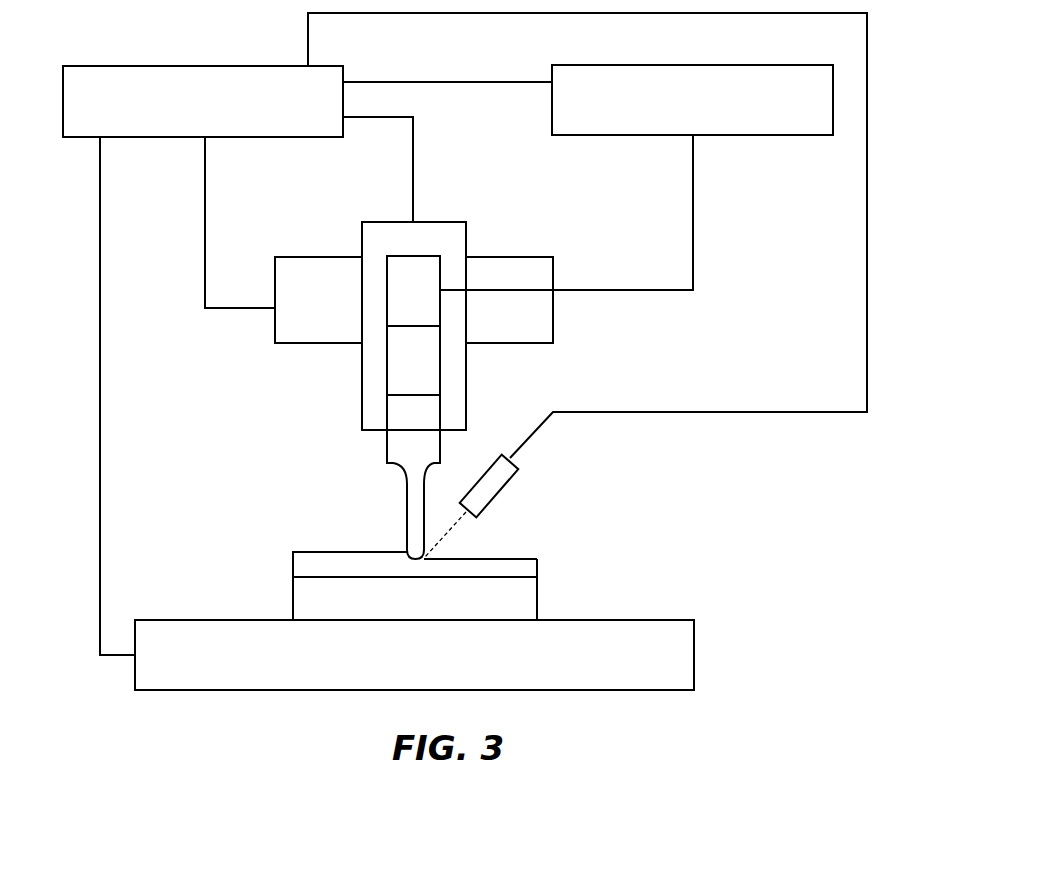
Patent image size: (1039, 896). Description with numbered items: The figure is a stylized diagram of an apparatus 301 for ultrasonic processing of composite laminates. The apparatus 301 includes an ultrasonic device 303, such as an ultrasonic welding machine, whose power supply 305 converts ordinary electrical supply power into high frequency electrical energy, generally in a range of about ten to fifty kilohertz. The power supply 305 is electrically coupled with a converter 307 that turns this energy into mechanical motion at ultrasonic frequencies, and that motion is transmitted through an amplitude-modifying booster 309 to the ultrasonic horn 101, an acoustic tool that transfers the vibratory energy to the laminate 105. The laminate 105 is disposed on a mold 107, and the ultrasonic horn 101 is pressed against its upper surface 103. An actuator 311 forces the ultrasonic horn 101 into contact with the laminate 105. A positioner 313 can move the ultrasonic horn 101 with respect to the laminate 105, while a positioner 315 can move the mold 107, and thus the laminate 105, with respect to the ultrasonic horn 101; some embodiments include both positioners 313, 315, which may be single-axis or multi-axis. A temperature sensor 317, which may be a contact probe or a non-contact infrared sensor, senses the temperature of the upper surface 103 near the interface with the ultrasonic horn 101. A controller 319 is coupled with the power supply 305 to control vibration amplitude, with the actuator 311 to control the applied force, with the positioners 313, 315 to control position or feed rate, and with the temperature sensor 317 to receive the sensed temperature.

The ultrasonic horn 101 is at (418, 443).
The upper surface 103 is at (487, 558).
The laminate 105 is at (525, 568).
The mold 107 is at (522, 598).
The apparatus 301 is at (284, 765).
The ultrasonic device 303 is at (737, 157).
The power supply 305 is at (662, 82).
The converter 307 is at (426, 270).
The amplitude-modifying booster 309 is at (412, 372).
The actuator 311 is at (386, 232).
The positioner 313 is at (290, 325).
The positioner 315 is at (175, 677).
The temperature sensor 317 is at (503, 478).
The controller 319 is at (84, 76).